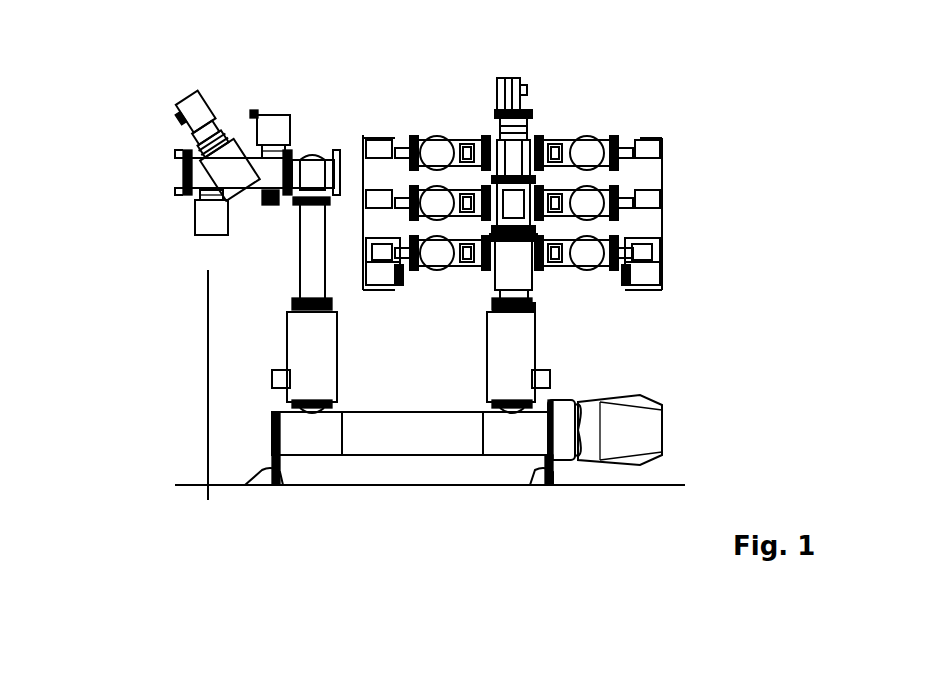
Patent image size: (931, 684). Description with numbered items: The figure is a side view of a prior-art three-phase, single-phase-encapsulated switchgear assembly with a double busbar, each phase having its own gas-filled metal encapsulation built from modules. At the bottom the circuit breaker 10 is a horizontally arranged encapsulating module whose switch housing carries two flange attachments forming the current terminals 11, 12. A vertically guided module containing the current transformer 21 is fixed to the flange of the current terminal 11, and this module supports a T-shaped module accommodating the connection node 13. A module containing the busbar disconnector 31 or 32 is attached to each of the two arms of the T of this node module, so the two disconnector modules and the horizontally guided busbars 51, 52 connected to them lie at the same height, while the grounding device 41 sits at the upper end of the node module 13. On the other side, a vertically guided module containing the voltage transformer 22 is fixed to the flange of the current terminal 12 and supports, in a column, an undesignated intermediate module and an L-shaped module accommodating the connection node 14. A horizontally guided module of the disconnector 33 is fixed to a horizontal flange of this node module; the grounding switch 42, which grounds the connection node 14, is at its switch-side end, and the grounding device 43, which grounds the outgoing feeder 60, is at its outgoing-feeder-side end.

The circuit breaker 10 is at (412, 436).
The current terminal 11 is at (510, 410).
The current terminal 12 is at (313, 410).
The connection node 13 is at (513, 255).
The connection node 14 is at (313, 172).
The current transformer 21 is at (515, 360).
The voltage transformer 22 is at (310, 358).
The busbar disconnector 31 is at (640, 252).
The busbar disconnector 32 is at (378, 268).
The disconnector 33 is at (215, 178).
The grounding device 41 is at (528, 127).
The grounding device 42 is at (277, 128).
The grounding device 43 is at (210, 222).
The busbar 51 is at (590, 250).
The busbar 52 is at (437, 258).
The outgoing feeder 60 is at (176, 175).